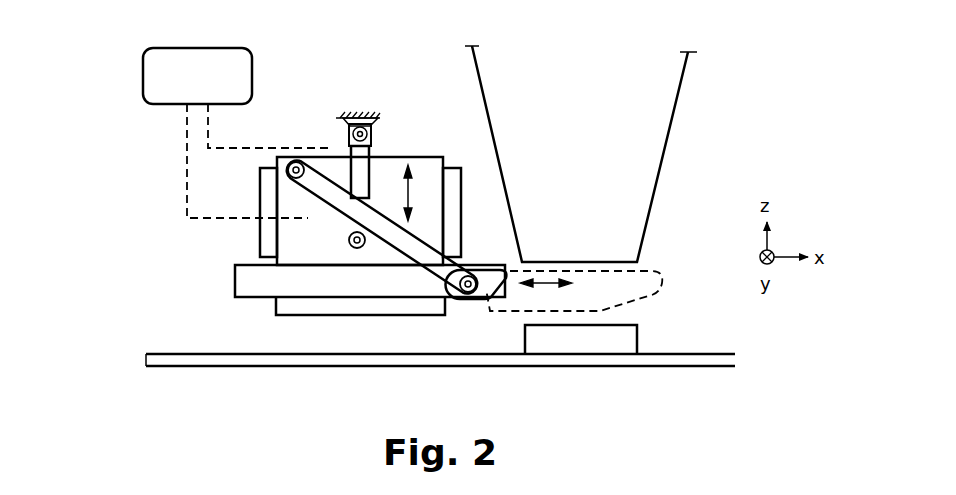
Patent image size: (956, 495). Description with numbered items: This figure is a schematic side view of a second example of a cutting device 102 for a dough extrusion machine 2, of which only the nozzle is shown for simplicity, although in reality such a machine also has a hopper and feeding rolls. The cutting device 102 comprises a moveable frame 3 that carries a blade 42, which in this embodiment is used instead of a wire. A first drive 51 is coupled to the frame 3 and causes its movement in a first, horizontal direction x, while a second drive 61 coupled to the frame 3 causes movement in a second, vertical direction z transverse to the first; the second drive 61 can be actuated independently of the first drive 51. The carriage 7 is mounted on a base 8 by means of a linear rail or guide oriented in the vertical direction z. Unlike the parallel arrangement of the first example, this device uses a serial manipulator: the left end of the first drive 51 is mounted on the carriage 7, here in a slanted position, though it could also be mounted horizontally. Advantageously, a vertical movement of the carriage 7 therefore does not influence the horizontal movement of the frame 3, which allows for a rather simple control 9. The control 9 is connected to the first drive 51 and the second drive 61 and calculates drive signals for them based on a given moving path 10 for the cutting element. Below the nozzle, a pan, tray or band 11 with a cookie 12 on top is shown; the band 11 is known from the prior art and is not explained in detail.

The cutting device 102 is at (130, 165).
The control 9 is at (243, 70).
The carriage 7 is at (318, 160).
The second drive 61 is at (362, 175).
The base 8 is at (455, 190).
The dough extrusion machine 2 is at (697, 125).
The blade 42 is at (490, 283).
The first drive 51 is at (343, 218).
The frame 3 is at (245, 288).
The moving path 10 is at (650, 296).
The cookie 12 is at (570, 345).
The band 11 is at (690, 358).